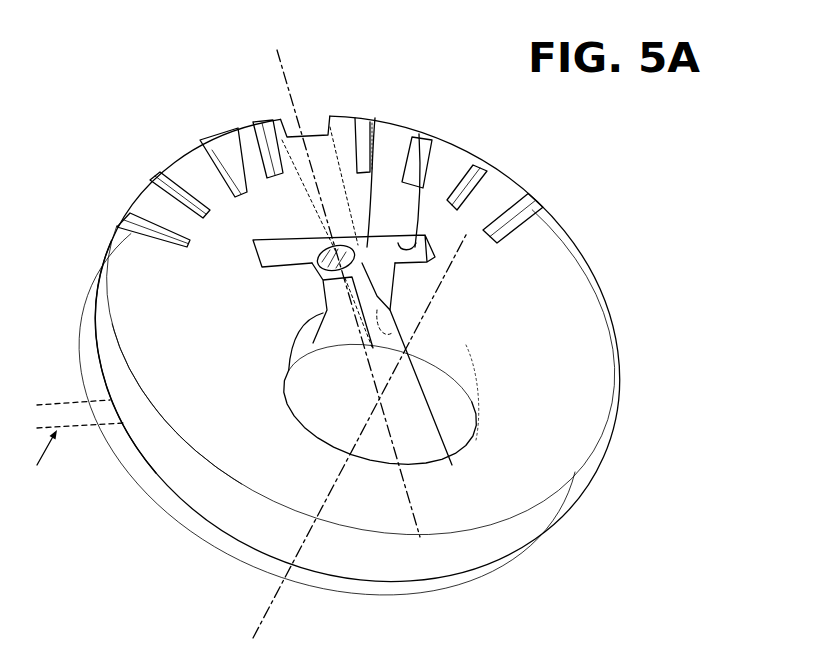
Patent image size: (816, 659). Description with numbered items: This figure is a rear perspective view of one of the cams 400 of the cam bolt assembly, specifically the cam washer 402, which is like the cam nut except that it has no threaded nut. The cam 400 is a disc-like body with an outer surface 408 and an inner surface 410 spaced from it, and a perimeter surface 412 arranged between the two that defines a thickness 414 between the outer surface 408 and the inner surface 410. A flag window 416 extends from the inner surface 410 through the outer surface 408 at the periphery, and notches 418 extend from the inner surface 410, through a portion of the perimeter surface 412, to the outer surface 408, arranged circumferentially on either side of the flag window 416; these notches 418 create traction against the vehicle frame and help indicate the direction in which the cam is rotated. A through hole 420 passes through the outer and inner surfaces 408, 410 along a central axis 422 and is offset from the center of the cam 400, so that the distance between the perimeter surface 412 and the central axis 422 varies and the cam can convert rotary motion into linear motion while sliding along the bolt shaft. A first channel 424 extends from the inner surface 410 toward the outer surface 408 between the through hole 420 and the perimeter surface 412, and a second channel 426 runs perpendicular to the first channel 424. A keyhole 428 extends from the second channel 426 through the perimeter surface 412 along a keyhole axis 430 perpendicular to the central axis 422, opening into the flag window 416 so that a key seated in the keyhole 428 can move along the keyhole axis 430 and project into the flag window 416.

The cam 400 is at (103, 58).
The cam washer 402 is at (109, 111).
The outer surface 408 is at (160, 480).
The inner surface 410 is at (208, 428).
The perimeter surface 412 is at (100, 337).
The thickness 414 is at (68, 394).
The flag window 416 is at (323, 102).
The notches 418 is at (243, 127).
The through hole 420 is at (457, 382).
The central axis 422 is at (280, 597).
The first channel 424 is at (382, 320).
The second channel 426 is at (452, 127).
The keyhole 428 is at (376, 135).
The keyhole axis 430 is at (286, 78).